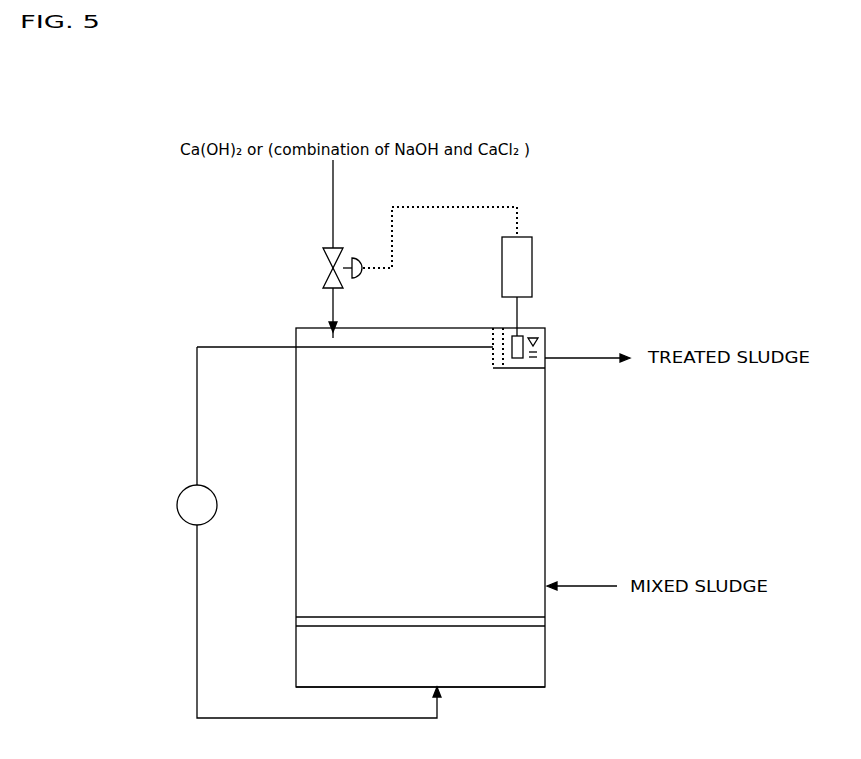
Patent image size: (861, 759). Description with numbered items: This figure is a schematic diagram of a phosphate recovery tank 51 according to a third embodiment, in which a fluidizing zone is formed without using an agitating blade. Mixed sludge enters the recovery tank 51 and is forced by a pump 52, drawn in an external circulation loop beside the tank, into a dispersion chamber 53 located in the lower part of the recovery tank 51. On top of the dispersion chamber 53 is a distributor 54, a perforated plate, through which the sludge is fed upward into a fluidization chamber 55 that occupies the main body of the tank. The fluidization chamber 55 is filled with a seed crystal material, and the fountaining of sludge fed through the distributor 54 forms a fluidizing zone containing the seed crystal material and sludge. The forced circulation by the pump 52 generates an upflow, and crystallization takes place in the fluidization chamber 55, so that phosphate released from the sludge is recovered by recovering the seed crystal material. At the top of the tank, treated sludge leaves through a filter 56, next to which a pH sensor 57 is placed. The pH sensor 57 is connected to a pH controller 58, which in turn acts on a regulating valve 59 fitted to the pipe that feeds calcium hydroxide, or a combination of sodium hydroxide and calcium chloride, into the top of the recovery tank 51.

The phosphate recovery tank 51 is at (556, 514).
The pump 52 is at (180, 493).
The dispersion chamber 53 is at (520, 658).
The distributor 54 is at (533, 620).
The fluidization chamber 55 is at (419, 491).
The filter 56 is at (503, 355).
The pH sensor 57 is at (520, 345).
The pH controller 58 is at (515, 260).
The regulating valve 59 is at (322, 253).